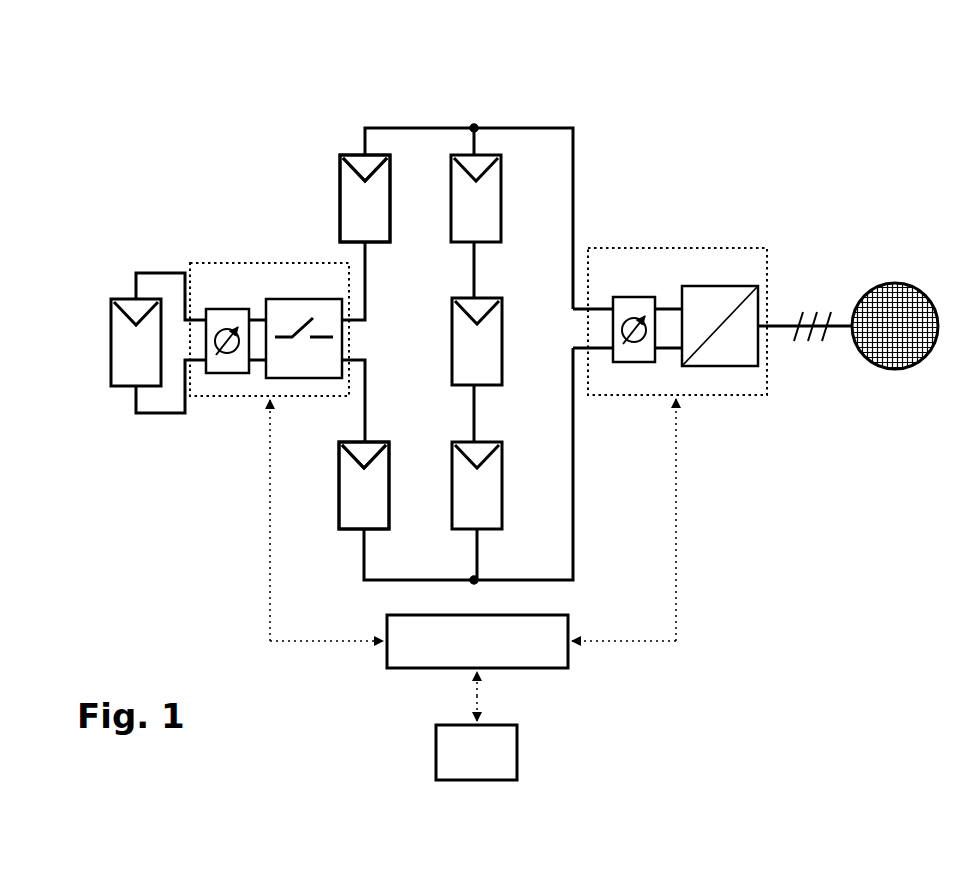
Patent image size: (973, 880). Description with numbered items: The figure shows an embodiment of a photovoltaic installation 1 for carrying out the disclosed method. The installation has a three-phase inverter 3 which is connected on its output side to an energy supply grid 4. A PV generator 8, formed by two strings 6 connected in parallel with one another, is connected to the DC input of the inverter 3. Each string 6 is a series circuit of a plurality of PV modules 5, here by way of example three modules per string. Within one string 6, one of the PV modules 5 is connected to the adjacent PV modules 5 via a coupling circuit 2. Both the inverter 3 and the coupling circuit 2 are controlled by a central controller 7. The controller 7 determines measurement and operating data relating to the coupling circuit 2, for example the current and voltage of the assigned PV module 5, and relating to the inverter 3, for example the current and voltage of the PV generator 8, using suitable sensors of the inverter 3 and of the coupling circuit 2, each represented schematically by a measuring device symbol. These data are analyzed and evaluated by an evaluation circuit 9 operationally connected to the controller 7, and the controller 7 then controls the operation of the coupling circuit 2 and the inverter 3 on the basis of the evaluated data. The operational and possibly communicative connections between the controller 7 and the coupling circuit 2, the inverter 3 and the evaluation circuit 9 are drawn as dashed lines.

The photovoltaic installation 1 is at (772, 162).
The coupling circuit 2 is at (228, 402).
The three-phase inverter 3 is at (690, 245).
The energy supply grid 4 is at (899, 282).
The PV module 5 is at (338, 200).
The string 6 is at (452, 143).
The central controller 7 is at (473, 560).
The PV generator 8 is at (592, 147).
The evaluation circuit 9 is at (516, 752).